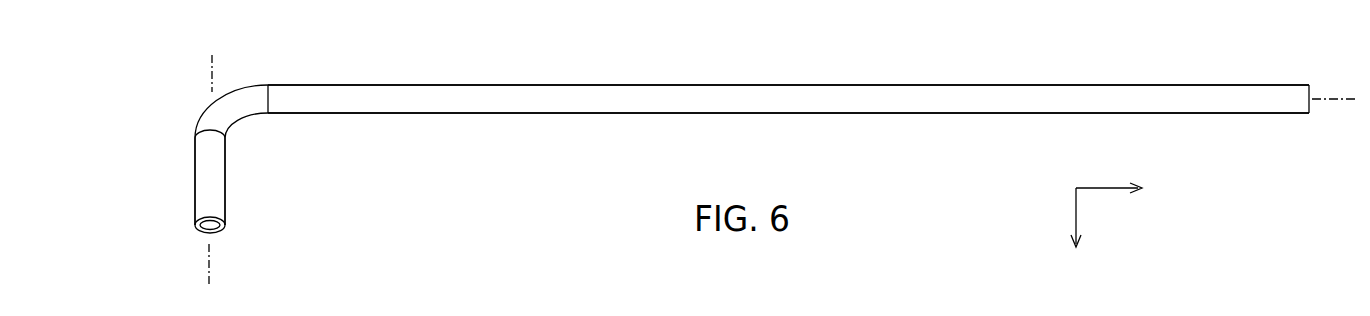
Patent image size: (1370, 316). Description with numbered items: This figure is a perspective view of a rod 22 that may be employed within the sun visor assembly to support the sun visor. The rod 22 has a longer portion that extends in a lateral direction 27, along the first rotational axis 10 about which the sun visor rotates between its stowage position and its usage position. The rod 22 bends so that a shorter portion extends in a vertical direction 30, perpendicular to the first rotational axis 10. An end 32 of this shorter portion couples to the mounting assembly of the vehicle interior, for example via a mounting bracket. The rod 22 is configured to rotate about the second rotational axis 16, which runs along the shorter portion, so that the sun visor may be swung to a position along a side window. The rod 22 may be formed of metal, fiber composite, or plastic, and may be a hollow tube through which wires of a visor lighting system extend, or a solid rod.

The first rotational axis 10 is at (1333, 100).
The second rotational axis 16 is at (207, 253).
The rod 22 is at (789, 85).
The lateral direction 27 is at (1104, 188).
The vertical direction 30 is at (1076, 212).
The end 32 is at (218, 231).